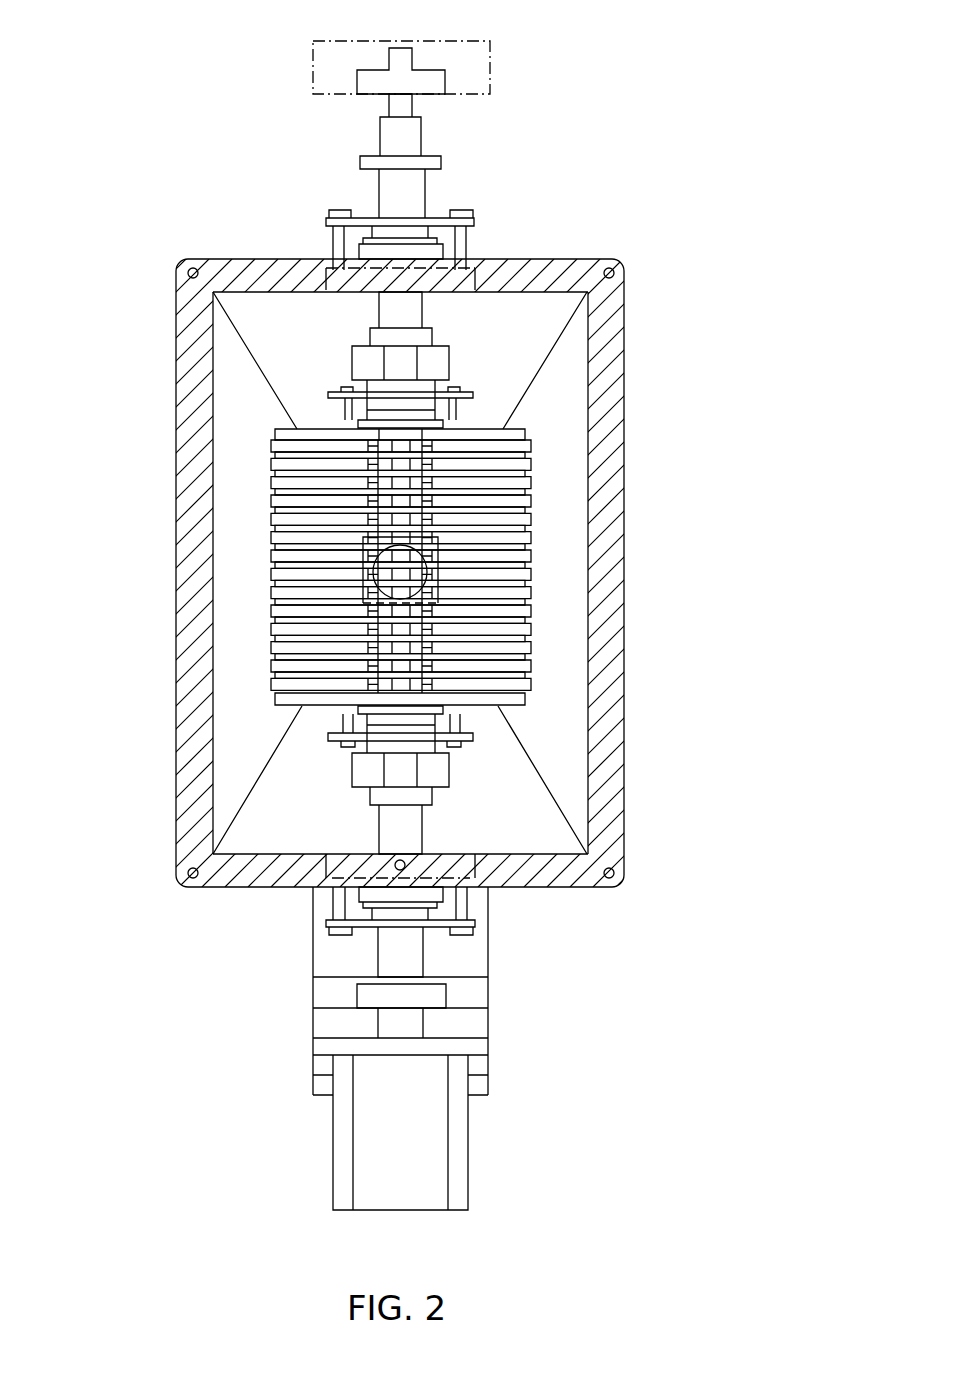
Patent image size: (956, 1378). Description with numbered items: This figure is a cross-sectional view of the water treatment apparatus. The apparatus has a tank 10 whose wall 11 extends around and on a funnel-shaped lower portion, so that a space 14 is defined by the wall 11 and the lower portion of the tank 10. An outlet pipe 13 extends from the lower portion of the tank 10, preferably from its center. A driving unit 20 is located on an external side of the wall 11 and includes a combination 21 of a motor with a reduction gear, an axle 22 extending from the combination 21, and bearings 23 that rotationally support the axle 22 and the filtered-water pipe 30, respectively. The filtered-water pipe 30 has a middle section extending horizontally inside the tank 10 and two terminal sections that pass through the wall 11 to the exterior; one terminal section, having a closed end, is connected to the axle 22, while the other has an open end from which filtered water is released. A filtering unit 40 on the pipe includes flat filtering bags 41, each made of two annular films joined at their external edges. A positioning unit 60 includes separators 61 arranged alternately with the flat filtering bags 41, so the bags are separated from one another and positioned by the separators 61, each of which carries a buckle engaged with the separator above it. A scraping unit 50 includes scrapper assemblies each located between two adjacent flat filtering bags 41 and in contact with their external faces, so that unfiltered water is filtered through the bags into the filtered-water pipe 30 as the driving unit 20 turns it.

The tank 10 is at (173, 398).
The wall 11 is at (607, 330).
The outlet pipe 13 is at (432, 521).
The space 14 is at (243, 757).
The driving unit 20 is at (333, 1112).
The combination of a motor with a reduction gear 21 is at (417, 1170).
The axle 22 is at (390, 1022).
The bearings 23 is at (438, 82).
The filtered-water pipe 30 is at (423, 438).
The filtering unit 40 is at (270, 532).
The flat filtering bags 41 is at (525, 583).
The scraping unit 50 is at (270, 467).
The positioning unit 60 is at (360, 632).
The separators 61 is at (401, 565).